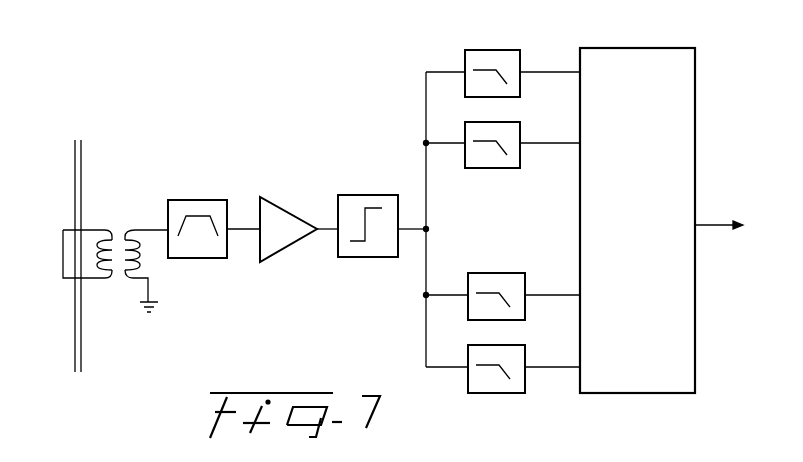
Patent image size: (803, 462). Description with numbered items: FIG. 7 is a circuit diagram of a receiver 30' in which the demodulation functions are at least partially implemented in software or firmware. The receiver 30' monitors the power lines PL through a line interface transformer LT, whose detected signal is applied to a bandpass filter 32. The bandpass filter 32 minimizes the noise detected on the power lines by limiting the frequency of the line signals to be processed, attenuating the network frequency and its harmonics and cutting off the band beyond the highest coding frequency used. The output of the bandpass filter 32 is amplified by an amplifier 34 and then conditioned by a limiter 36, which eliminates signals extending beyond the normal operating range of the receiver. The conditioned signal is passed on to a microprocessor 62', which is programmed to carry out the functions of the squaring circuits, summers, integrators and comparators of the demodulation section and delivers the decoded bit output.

The power lines PL is at (89, 255).
The line interface transformer LT is at (115, 260).
The receiver 30' is at (354, 212).
The bandpass filter 32 is at (193, 205).
The amplifier 34 is at (277, 213).
The limiter 36 is at (358, 200).
The microprocessor 62' is at (676, 207).